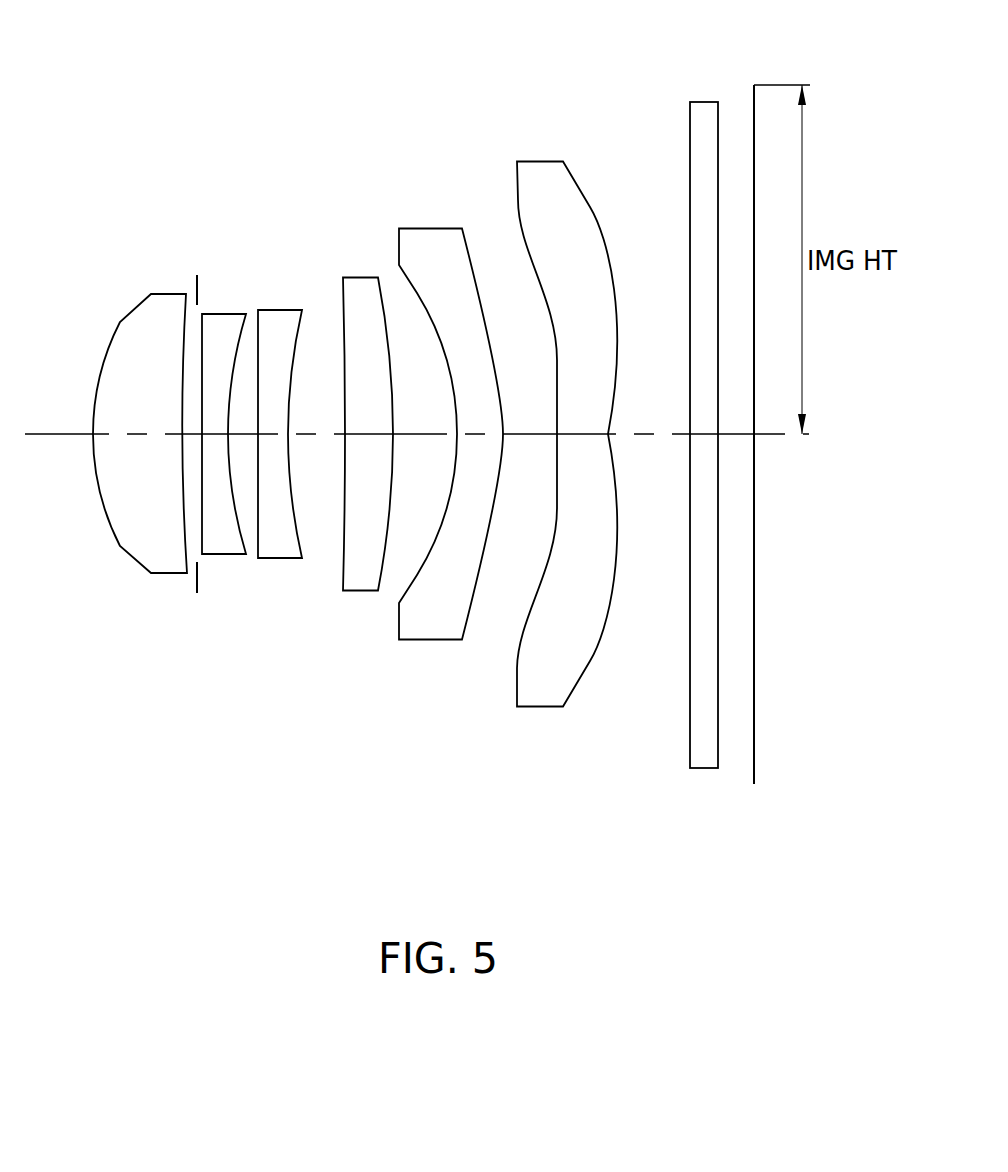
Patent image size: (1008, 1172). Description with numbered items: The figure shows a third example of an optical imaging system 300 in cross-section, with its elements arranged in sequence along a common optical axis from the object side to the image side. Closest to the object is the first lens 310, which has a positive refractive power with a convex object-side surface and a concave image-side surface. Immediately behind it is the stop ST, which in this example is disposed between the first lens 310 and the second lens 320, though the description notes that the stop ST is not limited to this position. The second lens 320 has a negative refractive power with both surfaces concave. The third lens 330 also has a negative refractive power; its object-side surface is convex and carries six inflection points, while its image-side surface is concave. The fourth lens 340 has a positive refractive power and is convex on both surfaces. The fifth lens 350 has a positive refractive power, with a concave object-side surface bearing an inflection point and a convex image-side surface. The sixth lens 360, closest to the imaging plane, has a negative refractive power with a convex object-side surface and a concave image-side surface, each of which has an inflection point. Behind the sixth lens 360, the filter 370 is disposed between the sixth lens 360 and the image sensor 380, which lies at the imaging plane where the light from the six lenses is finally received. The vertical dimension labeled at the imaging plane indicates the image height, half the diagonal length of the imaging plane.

The optical imaging system 300 is at (493, 103).
The stop ST is at (196, 290).
The first lens 310 is at (123, 540).
The second lens 320 is at (228, 554).
The third lens 330 is at (285, 557).
The fourth lens 340 is at (358, 590).
The fifth lens 350 is at (428, 638).
The sixth lens 360 is at (538, 706).
The filter 370 is at (708, 768).
The image sensor 380 is at (755, 744).